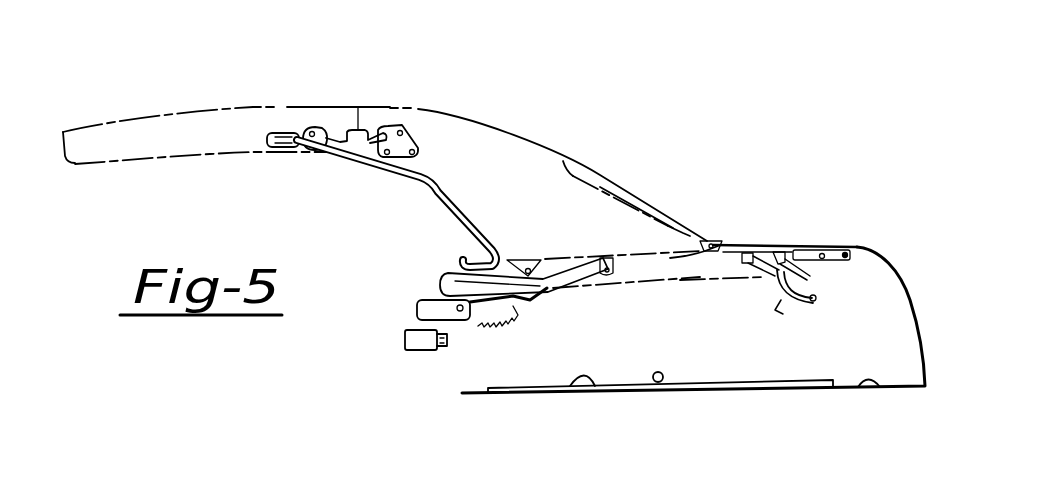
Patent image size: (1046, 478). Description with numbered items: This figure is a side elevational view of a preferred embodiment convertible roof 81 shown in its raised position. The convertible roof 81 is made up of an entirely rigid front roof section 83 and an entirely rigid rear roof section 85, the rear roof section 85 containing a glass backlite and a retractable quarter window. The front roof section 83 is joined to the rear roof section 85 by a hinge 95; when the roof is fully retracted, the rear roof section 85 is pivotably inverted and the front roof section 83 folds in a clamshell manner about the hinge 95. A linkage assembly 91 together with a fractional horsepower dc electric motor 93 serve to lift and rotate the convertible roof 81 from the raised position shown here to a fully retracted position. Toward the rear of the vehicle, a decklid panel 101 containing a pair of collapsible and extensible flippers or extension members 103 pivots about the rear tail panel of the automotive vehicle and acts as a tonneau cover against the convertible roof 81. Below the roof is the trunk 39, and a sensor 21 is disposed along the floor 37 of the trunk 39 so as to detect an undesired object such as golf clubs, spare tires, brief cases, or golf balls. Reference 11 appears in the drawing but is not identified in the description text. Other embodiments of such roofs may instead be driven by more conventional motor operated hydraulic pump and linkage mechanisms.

The vehicle body floor/pivot 11 is at (662, 381).
The sensor 21 is at (590, 377).
The floor 37 is at (880, 388).
The trunk 39 is at (687, 329).
The convertible roof 81 is at (416, 101).
The front roof section 83 is at (170, 148).
The rear roof section 85 is at (520, 163).
The linkage assembly 91 is at (531, 308).
The fractional horsepower dc electric motor 93 is at (405, 340).
The hinge 95 is at (316, 127).
The decklid panel 101 is at (733, 247).
The flippers or extension members 103 is at (795, 303).